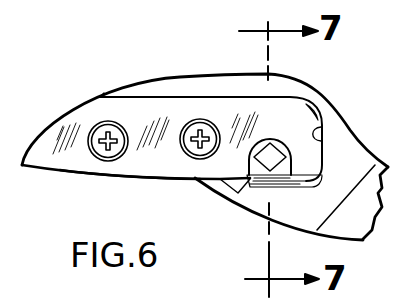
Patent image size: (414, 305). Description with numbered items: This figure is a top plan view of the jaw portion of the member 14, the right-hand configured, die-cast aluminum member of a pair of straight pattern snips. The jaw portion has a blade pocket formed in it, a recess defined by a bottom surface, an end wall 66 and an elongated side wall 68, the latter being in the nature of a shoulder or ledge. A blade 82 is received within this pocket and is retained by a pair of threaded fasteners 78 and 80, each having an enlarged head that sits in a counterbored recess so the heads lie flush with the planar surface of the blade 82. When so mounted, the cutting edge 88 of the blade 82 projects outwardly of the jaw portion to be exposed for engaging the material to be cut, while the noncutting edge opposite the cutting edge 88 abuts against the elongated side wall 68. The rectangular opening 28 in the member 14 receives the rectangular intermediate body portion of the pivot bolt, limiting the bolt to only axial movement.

The member 14 is at (319, 93).
The rectangular opening 28 is at (273, 150).
The end wall 66 is at (316, 137).
The elongated side wall 68 is at (170, 97).
The threaded fastener 78 is at (200, 150).
The threaded fastener 80 is at (101, 127).
The blade 82 is at (177, 174).
The cutting edge 88 is at (117, 177).